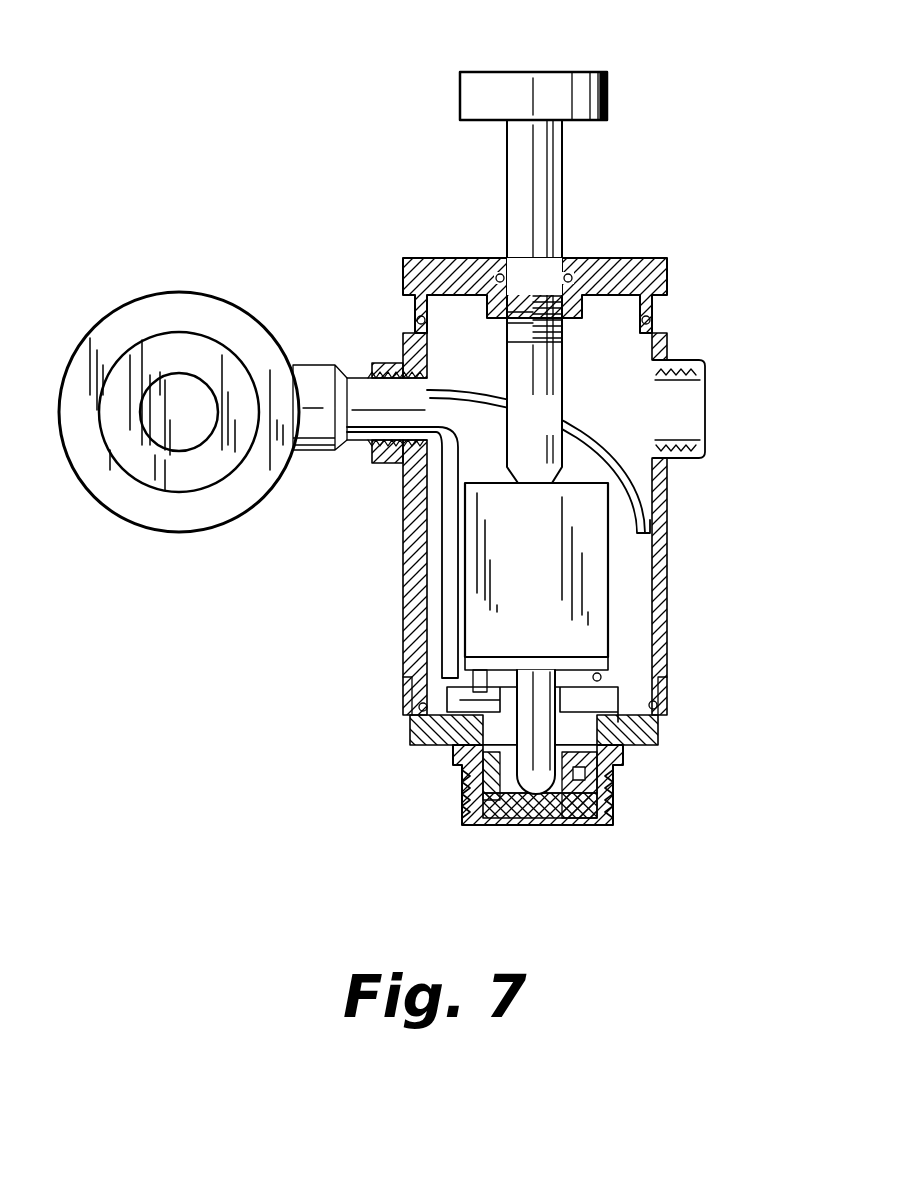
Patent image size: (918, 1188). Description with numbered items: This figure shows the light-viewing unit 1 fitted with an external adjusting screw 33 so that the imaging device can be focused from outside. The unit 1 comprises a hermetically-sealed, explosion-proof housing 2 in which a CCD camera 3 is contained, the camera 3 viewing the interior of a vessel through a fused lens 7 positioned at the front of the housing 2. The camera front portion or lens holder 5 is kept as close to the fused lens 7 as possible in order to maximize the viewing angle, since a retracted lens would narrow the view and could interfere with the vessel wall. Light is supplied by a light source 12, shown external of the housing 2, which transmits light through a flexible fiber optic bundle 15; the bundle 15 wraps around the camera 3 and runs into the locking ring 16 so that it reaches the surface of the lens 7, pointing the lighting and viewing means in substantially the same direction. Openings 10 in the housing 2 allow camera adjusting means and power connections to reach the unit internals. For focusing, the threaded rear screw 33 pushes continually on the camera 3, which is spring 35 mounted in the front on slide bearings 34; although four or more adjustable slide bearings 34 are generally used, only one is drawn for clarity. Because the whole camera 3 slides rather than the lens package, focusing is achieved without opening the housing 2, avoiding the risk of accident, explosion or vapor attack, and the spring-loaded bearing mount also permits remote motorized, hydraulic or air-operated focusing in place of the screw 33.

The light-viewing unit 1 is at (642, 188).
The housing 2 is at (660, 578).
The camera 3 is at (598, 585).
The camera lens holder 5 is at (535, 800).
The fused lens 7 is at (488, 822).
The openings 10 is at (705, 397).
The light source 12 is at (104, 322).
The fiber optic bundle 15 is at (478, 355).
The locking ring 16 is at (448, 437).
The external adjusting screw 33 is at (583, 78).
The slide bearings 34 is at (508, 566).
The spring 35 is at (565, 573).